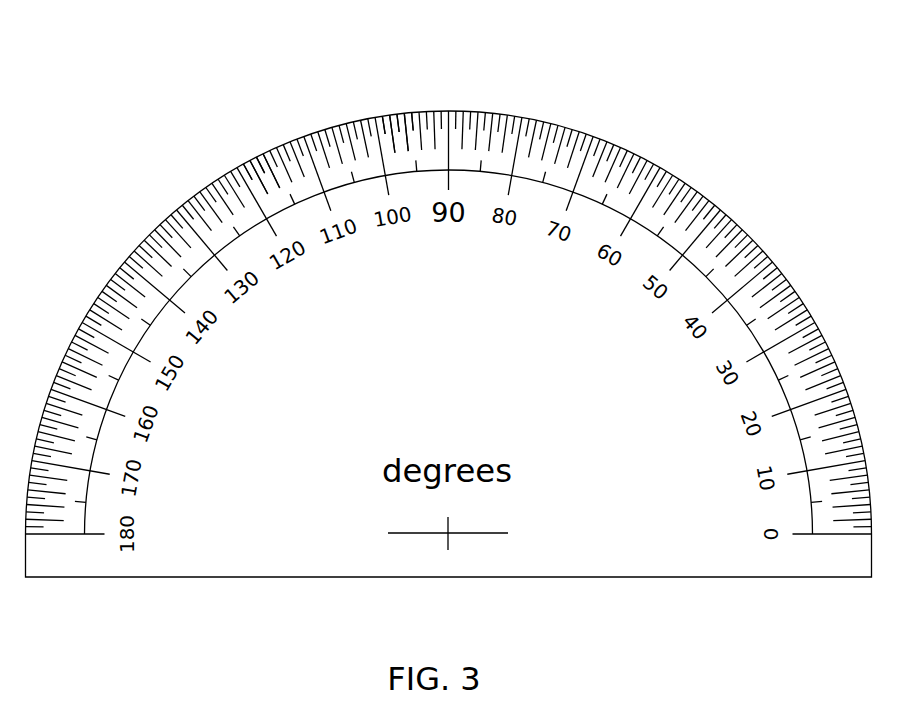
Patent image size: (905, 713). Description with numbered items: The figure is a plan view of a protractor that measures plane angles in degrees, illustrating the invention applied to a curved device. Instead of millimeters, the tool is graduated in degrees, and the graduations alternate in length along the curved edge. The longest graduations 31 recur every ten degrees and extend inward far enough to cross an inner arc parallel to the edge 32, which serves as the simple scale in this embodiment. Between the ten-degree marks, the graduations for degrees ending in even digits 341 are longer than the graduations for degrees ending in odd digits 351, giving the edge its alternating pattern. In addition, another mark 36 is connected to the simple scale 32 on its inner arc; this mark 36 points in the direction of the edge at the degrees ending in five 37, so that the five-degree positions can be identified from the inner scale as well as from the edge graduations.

The longest graduations 31 is at (197, 249).
The inner arc parallel to the edge 32 is at (219, 262).
The degrees ending in even digits 341 is at (239, 147).
The degrees ending in odd digits 351 is at (377, 104).
The mark 36 is at (545, 177).
The degrees ending in five 37 is at (560, 123).